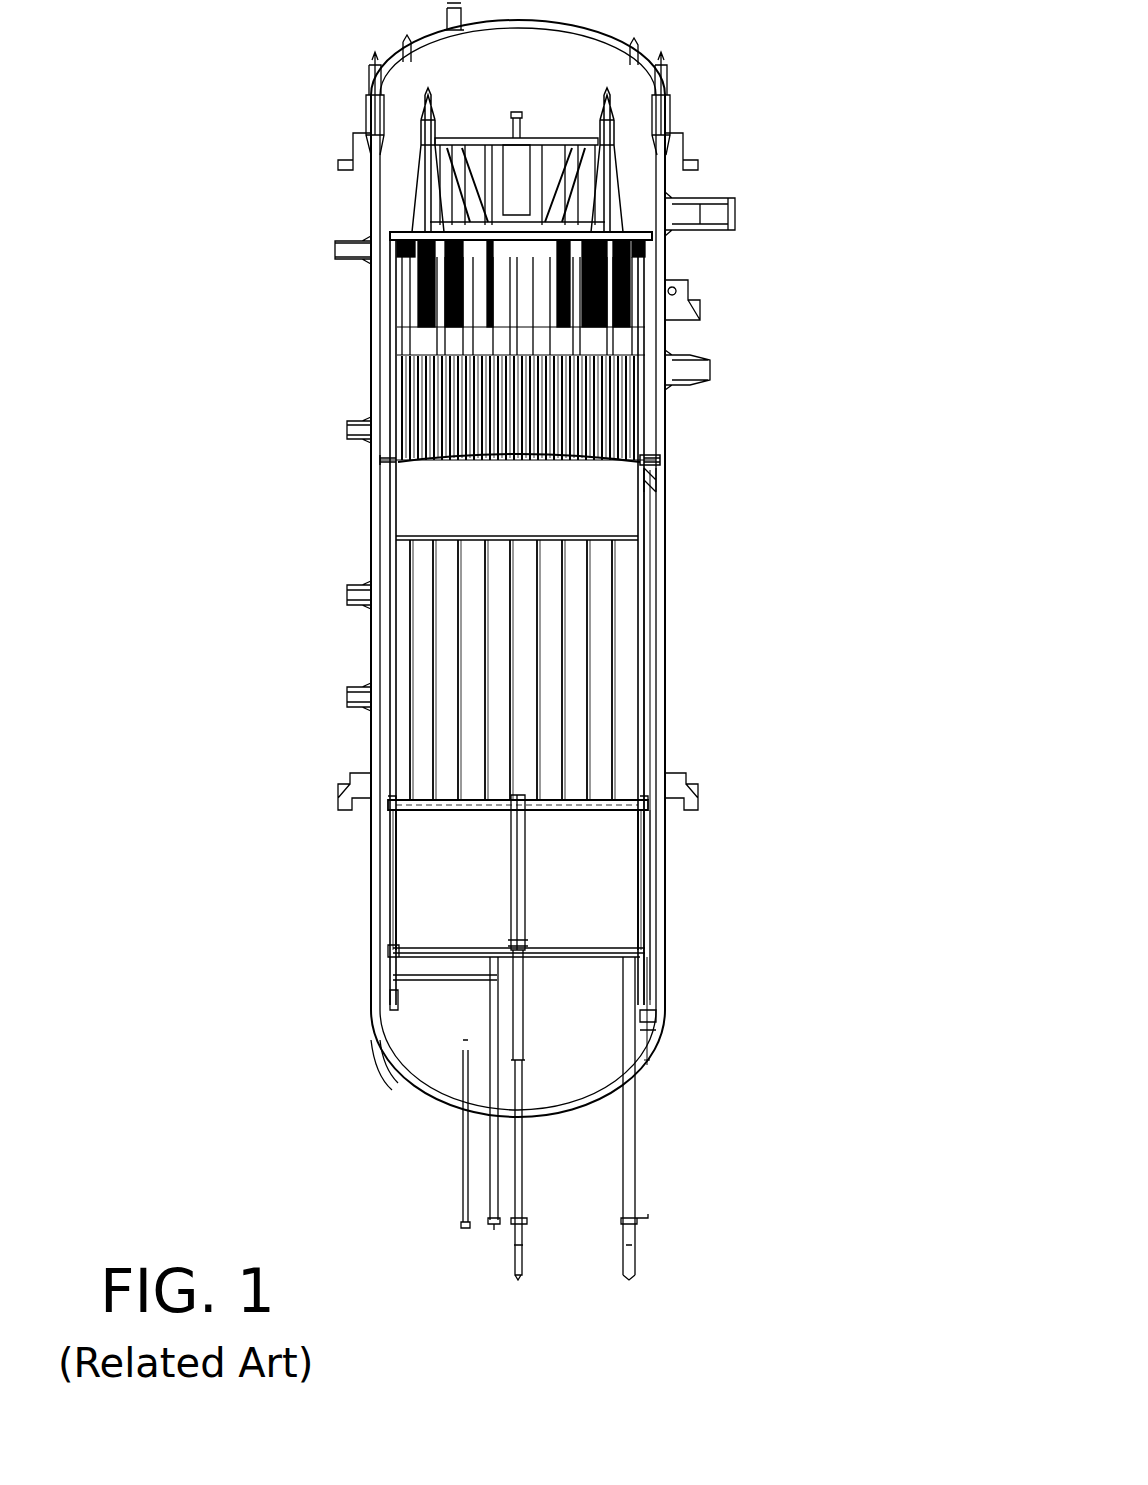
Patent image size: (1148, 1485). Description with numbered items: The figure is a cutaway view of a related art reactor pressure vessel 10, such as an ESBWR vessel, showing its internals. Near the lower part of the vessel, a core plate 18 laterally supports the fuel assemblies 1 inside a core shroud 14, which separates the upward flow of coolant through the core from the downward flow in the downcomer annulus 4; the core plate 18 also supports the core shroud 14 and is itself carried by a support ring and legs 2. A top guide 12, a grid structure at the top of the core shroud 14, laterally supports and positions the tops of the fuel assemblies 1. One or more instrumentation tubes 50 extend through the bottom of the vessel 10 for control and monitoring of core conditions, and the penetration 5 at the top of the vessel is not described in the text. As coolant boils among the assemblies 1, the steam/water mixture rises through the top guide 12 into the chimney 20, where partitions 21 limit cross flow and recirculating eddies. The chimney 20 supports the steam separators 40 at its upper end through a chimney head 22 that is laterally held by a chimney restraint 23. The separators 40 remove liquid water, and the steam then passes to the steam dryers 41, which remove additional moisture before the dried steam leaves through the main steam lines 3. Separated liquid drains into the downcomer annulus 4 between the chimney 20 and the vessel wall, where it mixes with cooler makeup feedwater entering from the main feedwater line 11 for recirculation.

The fuel assemblies 1 is at (540, 900).
The support ring and legs 2 is at (664, 1040).
The main steam lines 3 is at (742, 219).
The downcomer annulus 4 is at (661, 829).
The control rod drive nozzle 5 is at (355, 108).
The reactor pressure vessel 10 is at (358, 512).
The main feedwater line 11 is at (714, 370).
The top guide 12 is at (431, 810).
The core shroud 14 is at (657, 874).
The core plate 18 is at (612, 952).
The chimney 20 is at (655, 636).
The partitions 21 is at (574, 709).
The chimney head 22 is at (676, 459).
The chimney restraint 23 is at (658, 486).
The steam separators 40 is at (455, 394).
The steam dryers 41 is at (412, 187).
The instrumentation tubes 50 is at (477, 1034).